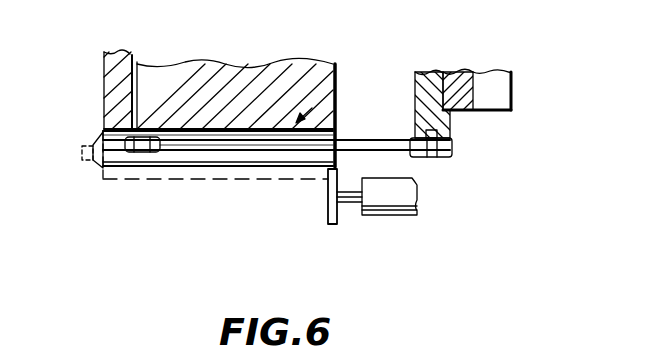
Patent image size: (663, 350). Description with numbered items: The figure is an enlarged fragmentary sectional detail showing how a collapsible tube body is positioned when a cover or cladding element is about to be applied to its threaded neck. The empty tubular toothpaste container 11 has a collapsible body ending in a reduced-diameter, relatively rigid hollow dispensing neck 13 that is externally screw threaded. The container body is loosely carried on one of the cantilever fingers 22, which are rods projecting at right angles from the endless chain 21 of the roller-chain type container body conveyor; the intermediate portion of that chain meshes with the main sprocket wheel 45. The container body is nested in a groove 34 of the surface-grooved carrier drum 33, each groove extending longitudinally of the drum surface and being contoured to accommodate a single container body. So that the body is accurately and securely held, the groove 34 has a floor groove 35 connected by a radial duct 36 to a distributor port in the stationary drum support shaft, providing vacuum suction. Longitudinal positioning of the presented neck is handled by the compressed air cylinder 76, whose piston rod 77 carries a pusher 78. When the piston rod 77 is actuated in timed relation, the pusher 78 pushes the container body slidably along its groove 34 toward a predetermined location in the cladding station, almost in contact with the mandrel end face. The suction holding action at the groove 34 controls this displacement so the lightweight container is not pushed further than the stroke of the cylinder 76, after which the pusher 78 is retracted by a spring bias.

The tubular toothpaste container 11 is at (186, 186).
The hollow dispensing neck 13 is at (82, 172).
The endless chain 21 is at (440, 157).
The cantilever fingers 22 is at (378, 142).
The drum 33 is at (244, 70).
The groove 34 is at (243, 155).
The floor groove 35 is at (337, 82).
The radial duct 36 is at (132, 93).
The main sprocket wheel 45 is at (425, 78).
The compressed air cylinder 76 is at (392, 214).
The piston rod 77 is at (351, 203).
The pusher 78 is at (327, 218).